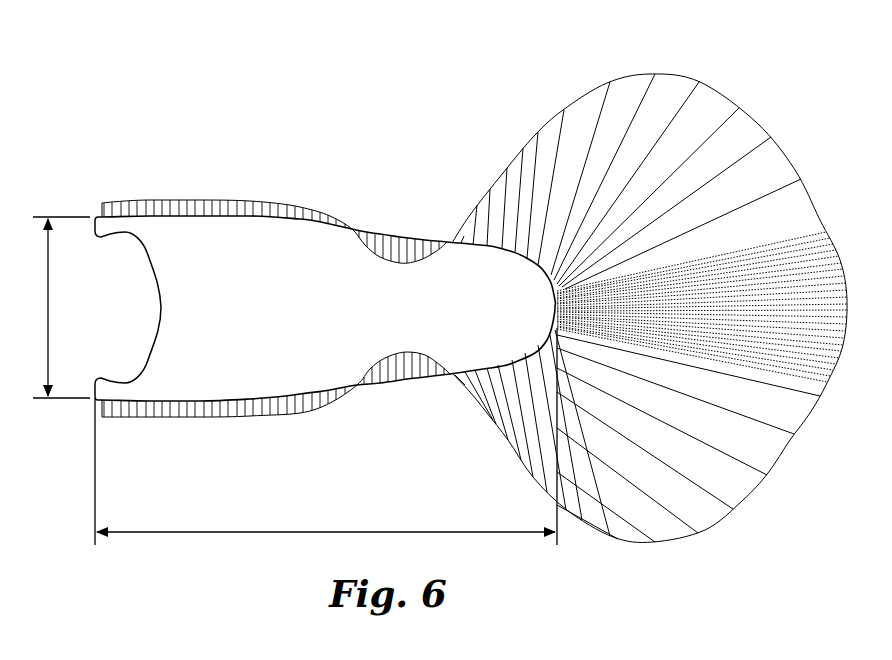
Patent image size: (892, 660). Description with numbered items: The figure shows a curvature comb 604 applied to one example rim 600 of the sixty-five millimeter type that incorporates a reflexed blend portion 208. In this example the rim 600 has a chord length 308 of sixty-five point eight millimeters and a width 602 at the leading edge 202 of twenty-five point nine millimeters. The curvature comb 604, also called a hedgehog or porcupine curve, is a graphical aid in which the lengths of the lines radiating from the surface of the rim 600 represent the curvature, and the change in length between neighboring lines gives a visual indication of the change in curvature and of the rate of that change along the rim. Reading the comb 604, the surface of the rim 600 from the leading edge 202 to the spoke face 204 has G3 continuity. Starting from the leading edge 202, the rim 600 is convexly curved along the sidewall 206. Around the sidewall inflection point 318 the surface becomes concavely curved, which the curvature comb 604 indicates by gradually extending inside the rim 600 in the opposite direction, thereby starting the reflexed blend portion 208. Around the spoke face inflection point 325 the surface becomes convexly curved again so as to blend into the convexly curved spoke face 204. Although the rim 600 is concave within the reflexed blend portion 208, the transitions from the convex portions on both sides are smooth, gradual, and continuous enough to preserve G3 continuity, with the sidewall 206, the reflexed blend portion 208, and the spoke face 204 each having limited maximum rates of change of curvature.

The rim 600 is at (649, 272).
The curvature comb 604 is at (718, 91).
The spoke face 204 is at (561, 286).
The leading edge 202 is at (95, 207).
The sidewall 206 is at (190, 160).
The reflexed blend portion 208 is at (406, 294).
The sidewall inflection point 318 is at (361, 394).
The spoke face inflection point 325 is at (447, 382).
The width 602 is at (52, 300).
The chord length 308 is at (164, 530).